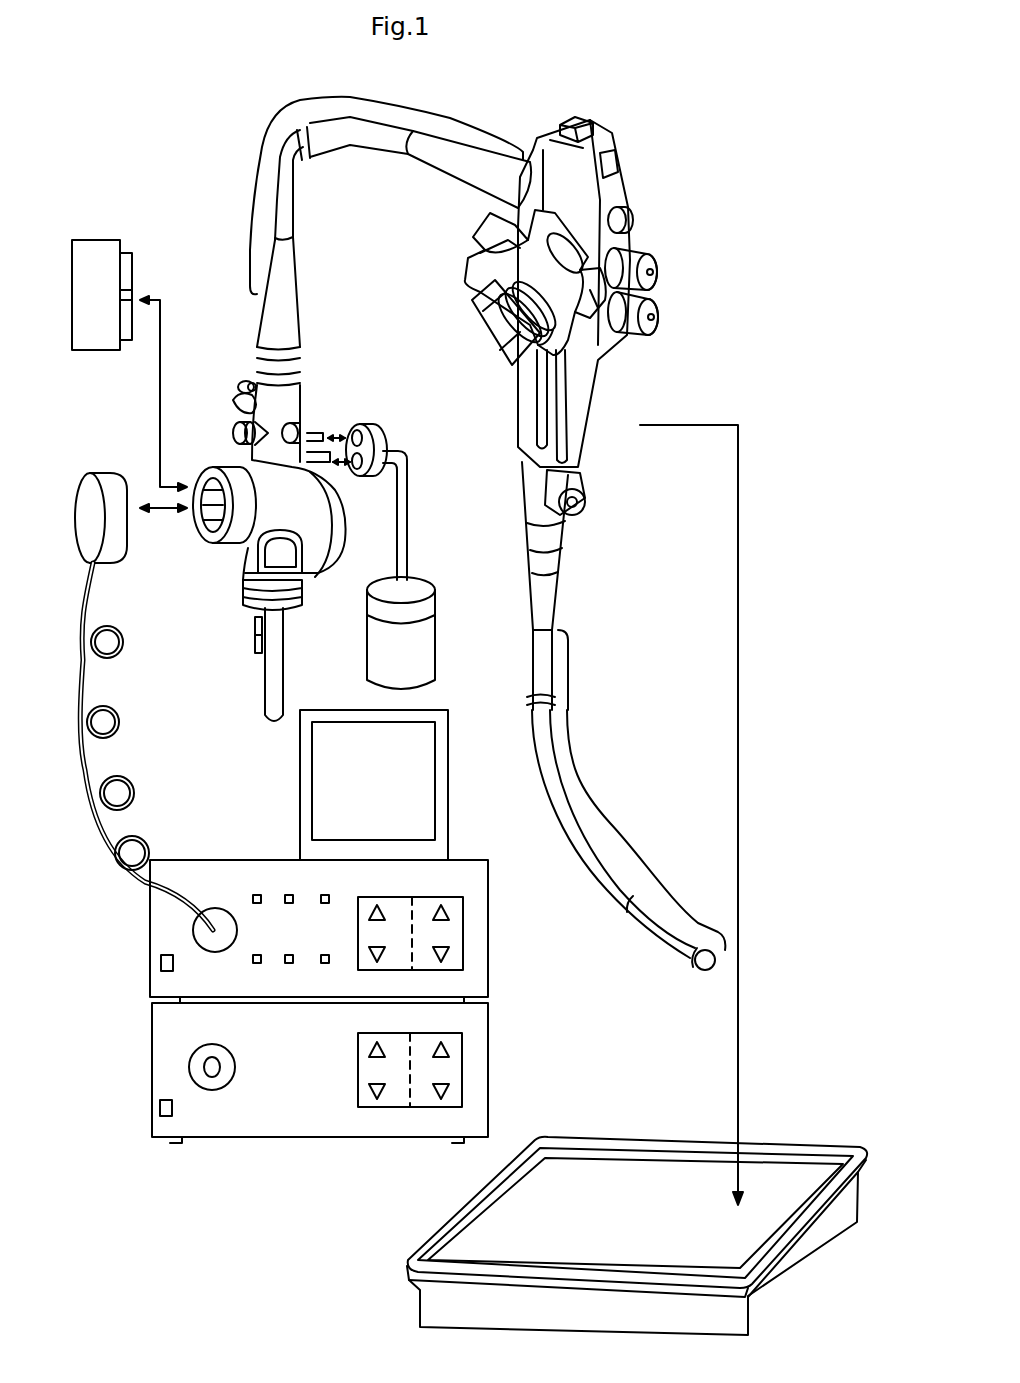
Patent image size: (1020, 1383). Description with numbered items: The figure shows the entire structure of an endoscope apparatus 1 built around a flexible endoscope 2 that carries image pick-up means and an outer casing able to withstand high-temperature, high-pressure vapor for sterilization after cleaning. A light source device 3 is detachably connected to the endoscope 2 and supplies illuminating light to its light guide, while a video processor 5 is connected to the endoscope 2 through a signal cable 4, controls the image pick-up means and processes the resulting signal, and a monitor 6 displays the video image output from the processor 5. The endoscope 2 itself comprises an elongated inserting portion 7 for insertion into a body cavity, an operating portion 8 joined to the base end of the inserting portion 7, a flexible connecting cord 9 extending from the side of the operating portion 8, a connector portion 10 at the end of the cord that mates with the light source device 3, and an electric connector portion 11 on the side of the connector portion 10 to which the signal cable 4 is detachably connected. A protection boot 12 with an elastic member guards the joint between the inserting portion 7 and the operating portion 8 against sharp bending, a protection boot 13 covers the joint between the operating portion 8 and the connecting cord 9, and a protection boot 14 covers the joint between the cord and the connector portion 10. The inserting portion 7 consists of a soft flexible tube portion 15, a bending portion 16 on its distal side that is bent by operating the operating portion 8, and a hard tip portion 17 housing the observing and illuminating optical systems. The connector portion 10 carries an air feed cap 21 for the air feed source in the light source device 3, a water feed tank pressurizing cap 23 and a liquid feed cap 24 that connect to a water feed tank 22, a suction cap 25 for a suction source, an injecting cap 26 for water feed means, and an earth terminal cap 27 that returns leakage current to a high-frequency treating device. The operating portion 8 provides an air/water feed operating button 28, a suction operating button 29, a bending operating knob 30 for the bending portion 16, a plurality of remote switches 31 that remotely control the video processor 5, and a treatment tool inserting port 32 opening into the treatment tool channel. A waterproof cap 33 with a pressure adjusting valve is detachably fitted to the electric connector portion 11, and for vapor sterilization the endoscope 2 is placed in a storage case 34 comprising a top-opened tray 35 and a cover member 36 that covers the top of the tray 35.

The endoscope apparatus 1 is at (258, 1166).
The endoscope 2 is at (566, 550).
The light source device 3 is at (152, 1062).
The signal cable 4 is at (125, 723).
The video processor 5 is at (150, 950).
The monitor 6 is at (448, 807).
The inserting portion 7 is at (628, 864).
The operating portion 8 is at (564, 298).
The connecting cord 9 is at (410, 110).
The connector portion 10 is at (312, 557).
The electric connector portion 11 is at (203, 540).
The protection boot 12 is at (552, 598).
The protection boot 13 is at (455, 178).
The protection boot 14 is at (265, 333).
The flexible tube portion 15 is at (580, 860).
The bending portion 16 is at (650, 923).
The hard tip portion 17 is at (695, 967).
The air feed cap 21 is at (262, 635).
The water feed tank 22 is at (378, 657).
The water feed tank pressurizing cap 23 is at (327, 431).
The liquid feed cap 24 is at (323, 465).
The suction cap 25 is at (233, 430).
The injecting cap 26 is at (245, 383).
The earth terminal cap 27 is at (305, 413).
The air/water feed operating button 28 is at (660, 320).
The suction operating button 29 is at (660, 273).
The bending operating knob 30 is at (473, 272).
The remote switches 31 is at (627, 150).
The treatment tool inserting port 32 is at (585, 500).
The waterproof cap with pressure adjusting valve 33 is at (112, 253).
The storage case 34 is at (637, 1193).
The tray 35 is at (793, 1272).
The cover member 36 is at (635, 1173).